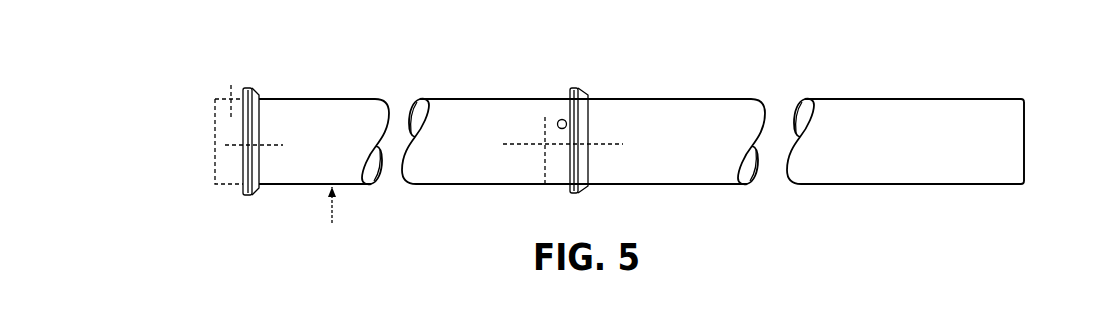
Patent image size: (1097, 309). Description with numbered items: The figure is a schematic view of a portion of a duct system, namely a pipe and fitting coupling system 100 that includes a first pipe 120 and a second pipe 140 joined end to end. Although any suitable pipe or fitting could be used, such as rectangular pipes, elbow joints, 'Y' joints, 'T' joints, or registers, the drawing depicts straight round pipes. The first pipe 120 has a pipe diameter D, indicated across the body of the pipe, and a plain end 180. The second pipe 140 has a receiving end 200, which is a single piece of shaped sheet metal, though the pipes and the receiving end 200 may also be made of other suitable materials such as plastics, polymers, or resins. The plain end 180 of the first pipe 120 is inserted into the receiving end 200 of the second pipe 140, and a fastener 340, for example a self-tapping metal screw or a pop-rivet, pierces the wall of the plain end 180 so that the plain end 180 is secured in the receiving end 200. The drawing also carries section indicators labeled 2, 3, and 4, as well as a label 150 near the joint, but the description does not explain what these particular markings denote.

The pipe and fitting coupling system 100 is at (653, 111).
The first pipe 120 is at (448, 87).
The second pipe 140 is at (708, 94).
The coupling joint 150 is at (579, 82).
The plain end 180 is at (557, 94).
The receiving end 200 is at (253, 79).
The fastener 340 is at (558, 119).
The section line 2- 2 is at (507, 147).
The section line 3- 3 is at (229, 85).
The section line 4- 4 is at (227, 148).
The pipe diameter D is at (330, 97).